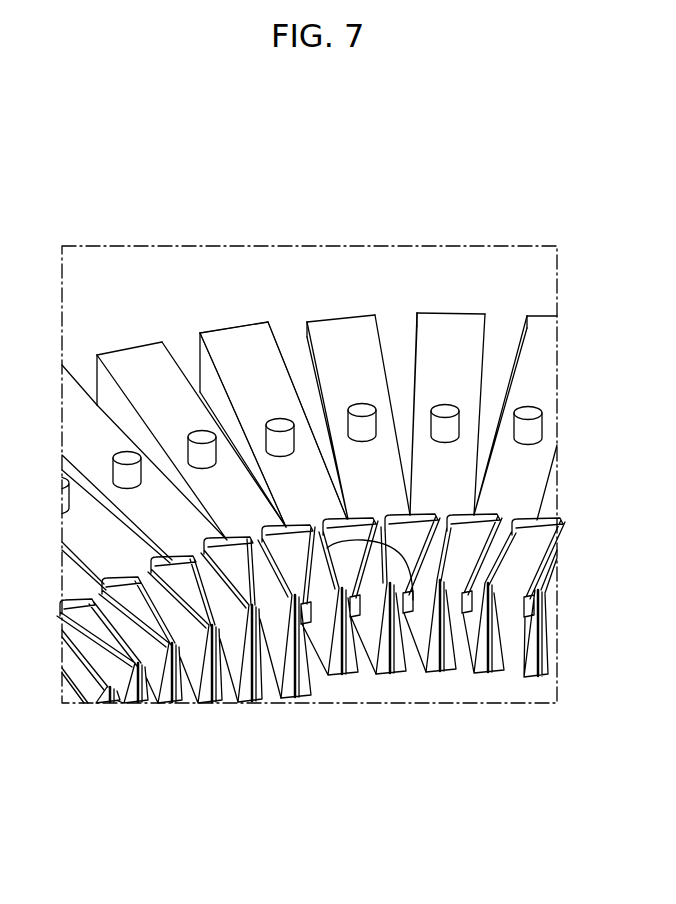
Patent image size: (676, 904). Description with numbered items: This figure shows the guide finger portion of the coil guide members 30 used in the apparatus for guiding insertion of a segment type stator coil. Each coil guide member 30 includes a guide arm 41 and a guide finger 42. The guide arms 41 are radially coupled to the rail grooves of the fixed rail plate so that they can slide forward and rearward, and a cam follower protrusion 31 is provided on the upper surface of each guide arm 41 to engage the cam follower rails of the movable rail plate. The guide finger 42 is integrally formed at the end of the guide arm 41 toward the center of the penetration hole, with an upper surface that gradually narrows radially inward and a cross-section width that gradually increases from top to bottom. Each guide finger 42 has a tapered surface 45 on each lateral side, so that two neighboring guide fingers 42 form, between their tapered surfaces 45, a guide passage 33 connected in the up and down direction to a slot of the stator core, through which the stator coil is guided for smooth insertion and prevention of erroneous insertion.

The coil guide member 30 is at (309, 386).
The cam follower protrusion 31 is at (196, 434).
The guide arm 41 is at (228, 345).
The guide passage 33 is at (249, 585).
The tapered surface 45 is at (324, 625).
The guide finger 42 is at (409, 530).